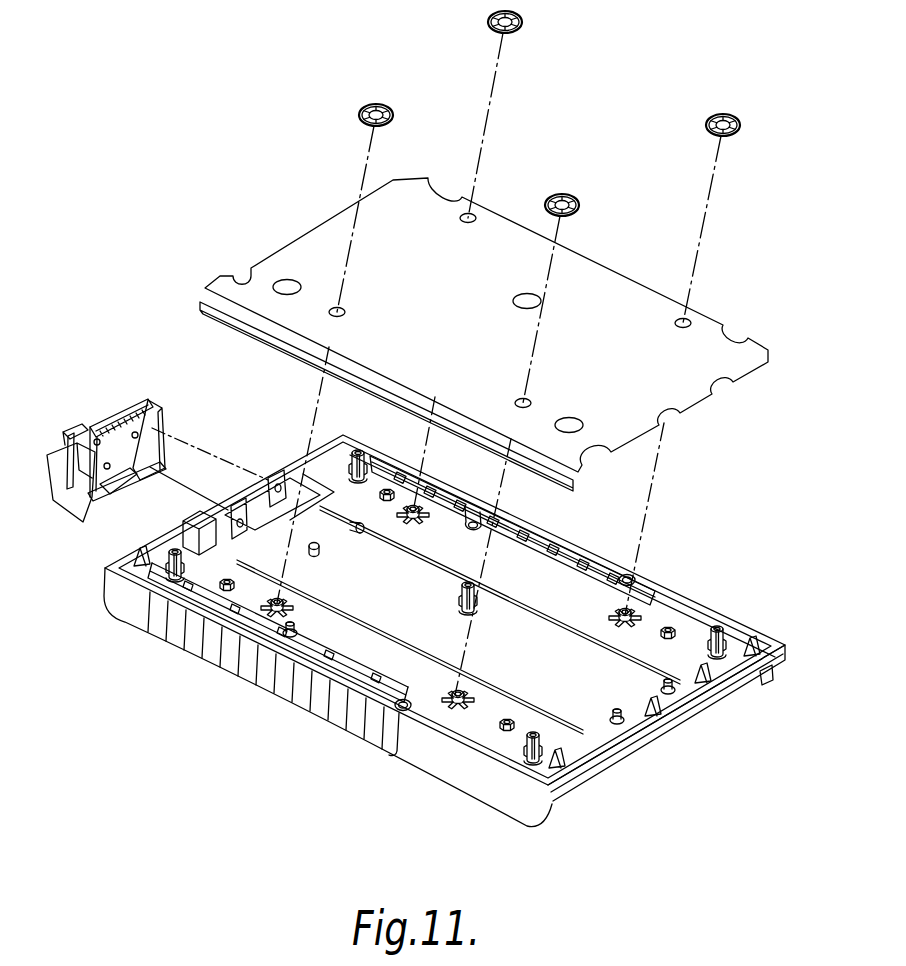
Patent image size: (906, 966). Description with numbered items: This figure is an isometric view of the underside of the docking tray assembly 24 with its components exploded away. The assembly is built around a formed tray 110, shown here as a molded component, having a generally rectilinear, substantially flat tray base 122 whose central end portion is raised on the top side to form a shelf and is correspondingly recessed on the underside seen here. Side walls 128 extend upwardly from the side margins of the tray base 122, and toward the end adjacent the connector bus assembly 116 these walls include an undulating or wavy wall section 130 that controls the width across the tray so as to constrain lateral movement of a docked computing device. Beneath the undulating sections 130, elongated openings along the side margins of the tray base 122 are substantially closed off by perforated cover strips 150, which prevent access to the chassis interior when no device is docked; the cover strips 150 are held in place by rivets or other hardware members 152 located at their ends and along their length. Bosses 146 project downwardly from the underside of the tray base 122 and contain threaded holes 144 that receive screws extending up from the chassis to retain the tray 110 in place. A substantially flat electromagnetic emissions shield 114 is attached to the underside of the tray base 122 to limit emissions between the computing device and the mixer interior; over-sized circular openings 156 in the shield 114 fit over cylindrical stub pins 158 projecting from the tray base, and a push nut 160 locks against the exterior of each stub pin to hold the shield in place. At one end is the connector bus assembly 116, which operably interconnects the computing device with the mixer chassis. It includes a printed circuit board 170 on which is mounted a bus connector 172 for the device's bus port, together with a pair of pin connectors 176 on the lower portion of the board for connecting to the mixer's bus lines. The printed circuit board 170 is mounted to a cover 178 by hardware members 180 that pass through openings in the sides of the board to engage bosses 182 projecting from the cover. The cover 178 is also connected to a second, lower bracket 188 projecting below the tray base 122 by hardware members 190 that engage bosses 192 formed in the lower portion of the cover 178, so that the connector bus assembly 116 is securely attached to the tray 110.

The docking tray assembly 24 is at (160, 704).
The tray 110 is at (650, 740).
The electromagnetic emissions shield 114 is at (300, 240).
The connector bus assembly 116 is at (97, 405).
The tray base 122 is at (597, 767).
The side walls 128 is at (413, 778).
The undulating wall section 130 is at (243, 657).
The threaded holes 144 is at (160, 553).
The bosses 146 is at (165, 570).
The perforated cover strips 150 is at (355, 738).
The hardware members 152 is at (402, 710).
The circular openings 156 is at (313, 672).
The cylindrical stub pins 158 is at (462, 708).
The push nut 160 is at (563, 195).
The printed circuit board 170 is at (160, 450).
The bus connector 172 is at (140, 470).
The pin connectors 176 is at (134, 397).
The cover 178 is at (48, 497).
The hardware members 180 is at (118, 485).
The bosses 182 is at (67, 452).
The lower bracket 188 is at (262, 512).
The hardware members 190 is at (220, 602).
The bosses 192 is at (87, 430).